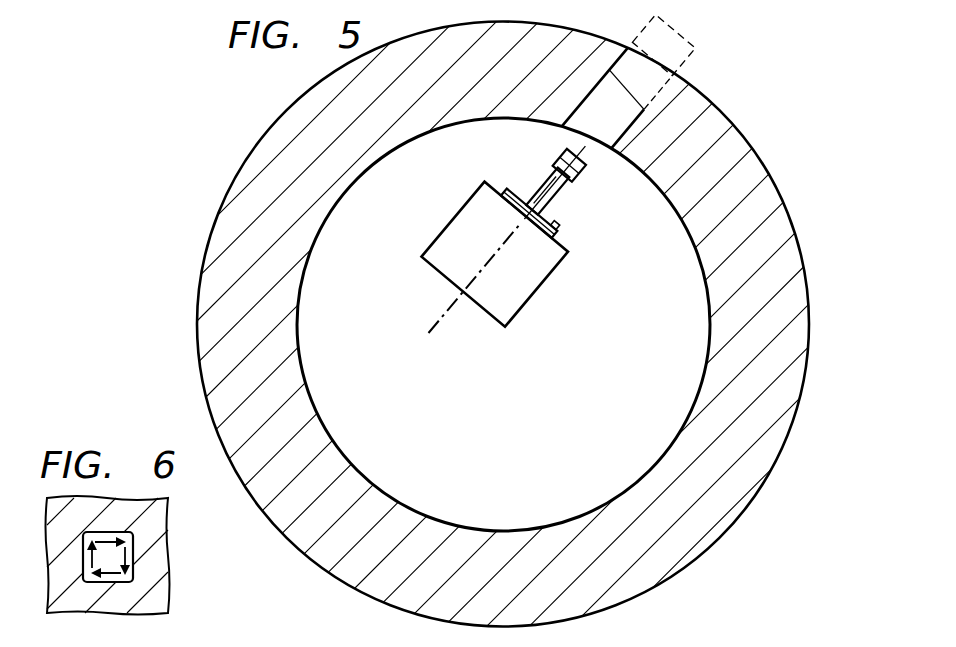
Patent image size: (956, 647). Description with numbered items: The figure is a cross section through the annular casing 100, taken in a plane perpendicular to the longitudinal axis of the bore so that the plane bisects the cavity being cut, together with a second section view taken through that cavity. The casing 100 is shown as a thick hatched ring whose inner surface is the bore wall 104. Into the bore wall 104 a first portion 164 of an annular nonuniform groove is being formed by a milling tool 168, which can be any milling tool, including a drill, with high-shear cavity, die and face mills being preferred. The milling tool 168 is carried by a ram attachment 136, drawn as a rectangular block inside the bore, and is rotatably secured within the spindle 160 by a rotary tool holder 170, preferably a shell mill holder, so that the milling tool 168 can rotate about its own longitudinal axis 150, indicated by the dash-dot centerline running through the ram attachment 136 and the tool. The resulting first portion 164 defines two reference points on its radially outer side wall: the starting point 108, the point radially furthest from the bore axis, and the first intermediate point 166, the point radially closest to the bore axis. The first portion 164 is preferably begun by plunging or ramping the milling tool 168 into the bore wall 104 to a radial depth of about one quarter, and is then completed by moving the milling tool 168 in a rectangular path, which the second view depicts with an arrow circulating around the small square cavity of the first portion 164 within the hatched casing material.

In FIG. 5, the casing 100 is at (256, 135).
In FIG. 5, the bore wall 104 is at (651, 469).
In FIG. 5, the starting point 108 is at (609, 70).
In FIG. 5, the ram attachment 136 is at (443, 215).
In FIG. 5, the longitudinal axis 150 is at (430, 320).
In FIG. 5, the spindle 160 is at (506, 193).
In FIG. 5, the first portion 164 is at (680, 34).
In FIG. 6, the first portion 164 is at (126, 546).
In FIG. 5, the first intermediate point 166 is at (645, 110).
In FIG. 5, the milling tool 168 is at (583, 171).
In FIG. 5, the rotary tool holder 170 is at (530, 193).